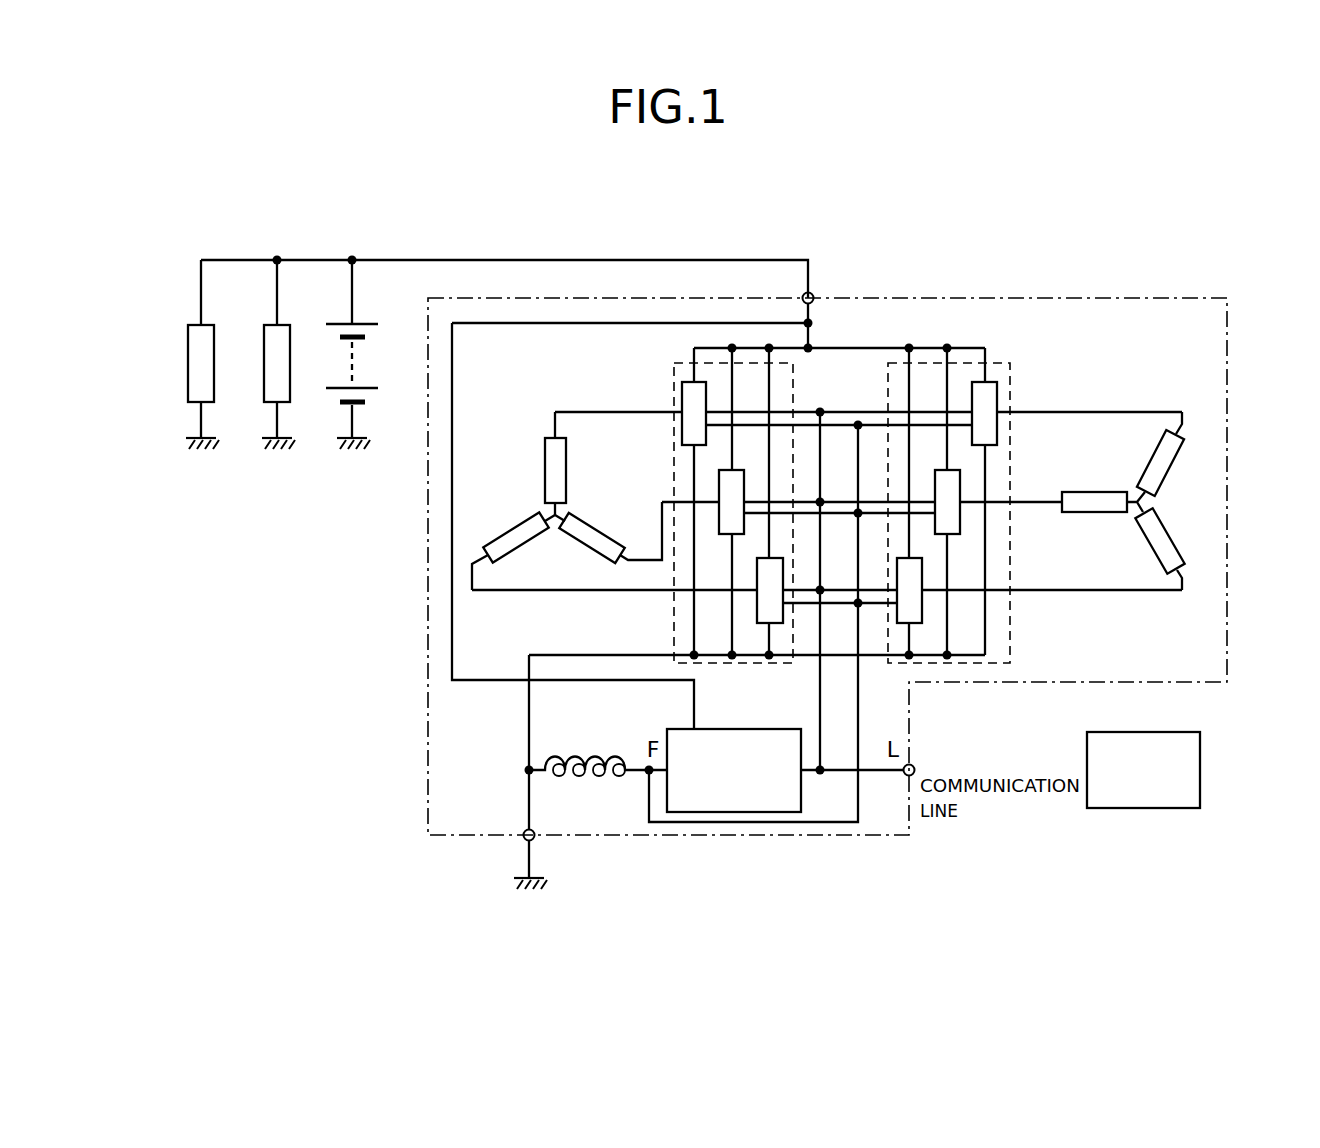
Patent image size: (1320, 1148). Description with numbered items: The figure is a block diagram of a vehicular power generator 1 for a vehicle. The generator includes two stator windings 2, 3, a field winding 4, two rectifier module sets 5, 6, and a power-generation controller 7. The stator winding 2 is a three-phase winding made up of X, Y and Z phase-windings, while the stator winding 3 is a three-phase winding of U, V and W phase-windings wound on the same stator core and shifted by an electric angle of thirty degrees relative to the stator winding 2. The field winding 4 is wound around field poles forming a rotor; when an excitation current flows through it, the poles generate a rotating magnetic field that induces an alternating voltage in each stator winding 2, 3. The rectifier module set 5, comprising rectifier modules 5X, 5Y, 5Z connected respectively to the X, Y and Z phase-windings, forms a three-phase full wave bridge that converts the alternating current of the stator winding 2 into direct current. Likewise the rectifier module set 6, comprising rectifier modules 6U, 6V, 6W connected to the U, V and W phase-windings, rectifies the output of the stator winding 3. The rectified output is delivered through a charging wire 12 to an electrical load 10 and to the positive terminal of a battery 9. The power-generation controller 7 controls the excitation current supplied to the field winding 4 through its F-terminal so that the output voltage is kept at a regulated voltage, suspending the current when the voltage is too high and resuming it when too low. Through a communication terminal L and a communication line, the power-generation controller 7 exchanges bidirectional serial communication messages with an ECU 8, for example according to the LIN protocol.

The vehicular power generator 1 is at (1190, 297).
The stator winding 2 is at (538, 503).
The stator winding 3 is at (1135, 492).
The field winding 4 is at (588, 755).
The rectifier module set 5 is at (697, 497).
The rectifier module 5X is at (682, 390).
The rectifier module 5Y is at (757, 600).
The rectifier module 5Z is at (719, 482).
The rectifier module set 6 is at (995, 502).
The rectifier module 6U is at (1000, 395).
The rectifier module 6V is at (960, 487).
The rectifier module 6W is at (922, 598).
The power-generation controller 7 is at (728, 729).
The ECU 8 is at (1195, 731).
The battery 9 is at (368, 391).
The electrical load 10 is at (198, 324).
The charging wire 12 is at (487, 259).